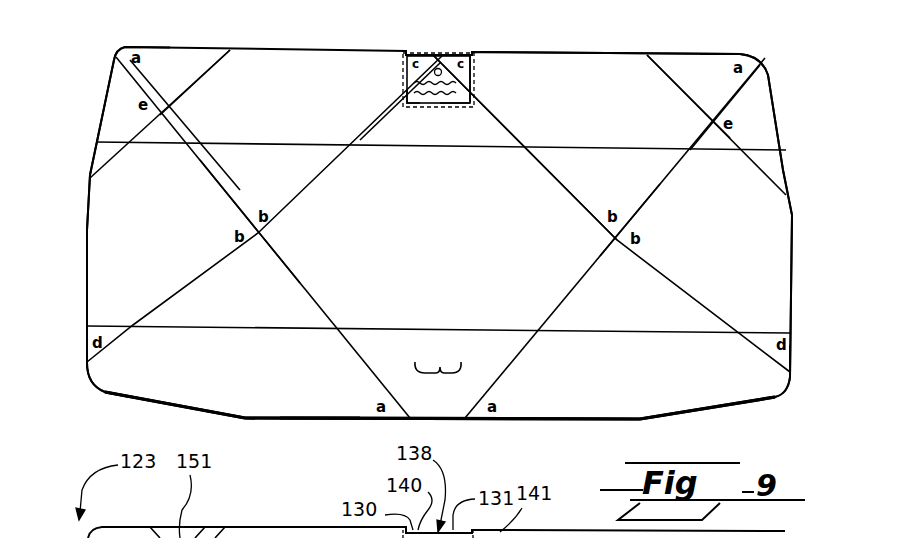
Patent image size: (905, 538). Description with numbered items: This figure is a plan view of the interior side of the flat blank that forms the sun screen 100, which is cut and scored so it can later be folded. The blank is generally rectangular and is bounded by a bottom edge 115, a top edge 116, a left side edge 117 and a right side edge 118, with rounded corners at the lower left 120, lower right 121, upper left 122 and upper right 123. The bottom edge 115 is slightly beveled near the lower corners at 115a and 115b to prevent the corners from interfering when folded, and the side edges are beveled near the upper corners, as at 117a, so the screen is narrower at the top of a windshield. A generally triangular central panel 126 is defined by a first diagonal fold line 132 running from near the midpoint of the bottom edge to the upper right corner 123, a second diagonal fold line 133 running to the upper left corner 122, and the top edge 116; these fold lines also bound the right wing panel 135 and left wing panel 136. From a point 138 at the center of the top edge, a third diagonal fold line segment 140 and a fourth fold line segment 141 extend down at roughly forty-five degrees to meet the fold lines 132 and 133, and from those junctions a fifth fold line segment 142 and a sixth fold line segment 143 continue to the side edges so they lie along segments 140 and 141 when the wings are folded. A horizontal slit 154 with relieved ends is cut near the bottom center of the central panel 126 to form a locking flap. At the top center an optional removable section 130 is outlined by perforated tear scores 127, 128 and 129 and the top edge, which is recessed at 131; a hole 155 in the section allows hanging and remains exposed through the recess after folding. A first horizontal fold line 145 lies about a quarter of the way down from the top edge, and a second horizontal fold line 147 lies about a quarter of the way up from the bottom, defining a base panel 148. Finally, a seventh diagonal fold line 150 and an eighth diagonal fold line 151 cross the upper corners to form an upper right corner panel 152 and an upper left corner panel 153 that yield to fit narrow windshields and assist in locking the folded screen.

The sun screen 100 is at (713, 434).
The bottom edge 115 is at (515, 424).
The beveled portion of bottom edge 115a is at (160, 405).
The beveled portion of bottom edge 115b is at (667, 421).
The top edge 116 is at (610, 38).
The left side edge 117 is at (87, 262).
The beveled portion of left side edge 117a is at (97, 120).
The right side edge 118 is at (777, 114).
The lower left corner 120 is at (87, 388).
The lower right corner 121 is at (783, 398).
The upper left corner 122 is at (106, 50).
The upper right corner 123 is at (788, 44).
The central panel 126 is at (438, 236).
The tear score 127 is at (400, 66).
The tear score 128 is at (413, 108).
The tear score 129 is at (476, 63).
The removable section 130 is at (455, 106).
The recess 131 is at (452, 55).
The first diagonal fold line 132 is at (575, 282).
The second diagonal fold line 133 is at (298, 277).
The right wing panel 135 is at (724, 219).
The left wing panel 136 is at (167, 189).
The point 138 is at (440, 53).
The third diagonal fold line segment 140 is at (560, 188).
The fourth fold line segment 141 is at (378, 114).
The fifth fold line segment 142 is at (678, 288).
The sixth fold line segment 143 is at (208, 268).
The first horizontal fold line 145 is at (598, 147).
The second horizontal fold line 147 is at (390, 327).
The base panel 148 is at (320, 402).
The seventh diagonal fold line 150 is at (678, 87).
The eighth diagonal fold line 151 is at (202, 78).
The upper right corner panel 152 is at (715, 65).
The upper left corner panel 153 is at (178, 62).
The slit 154 is at (440, 365).
The hole 155 is at (438, 78).